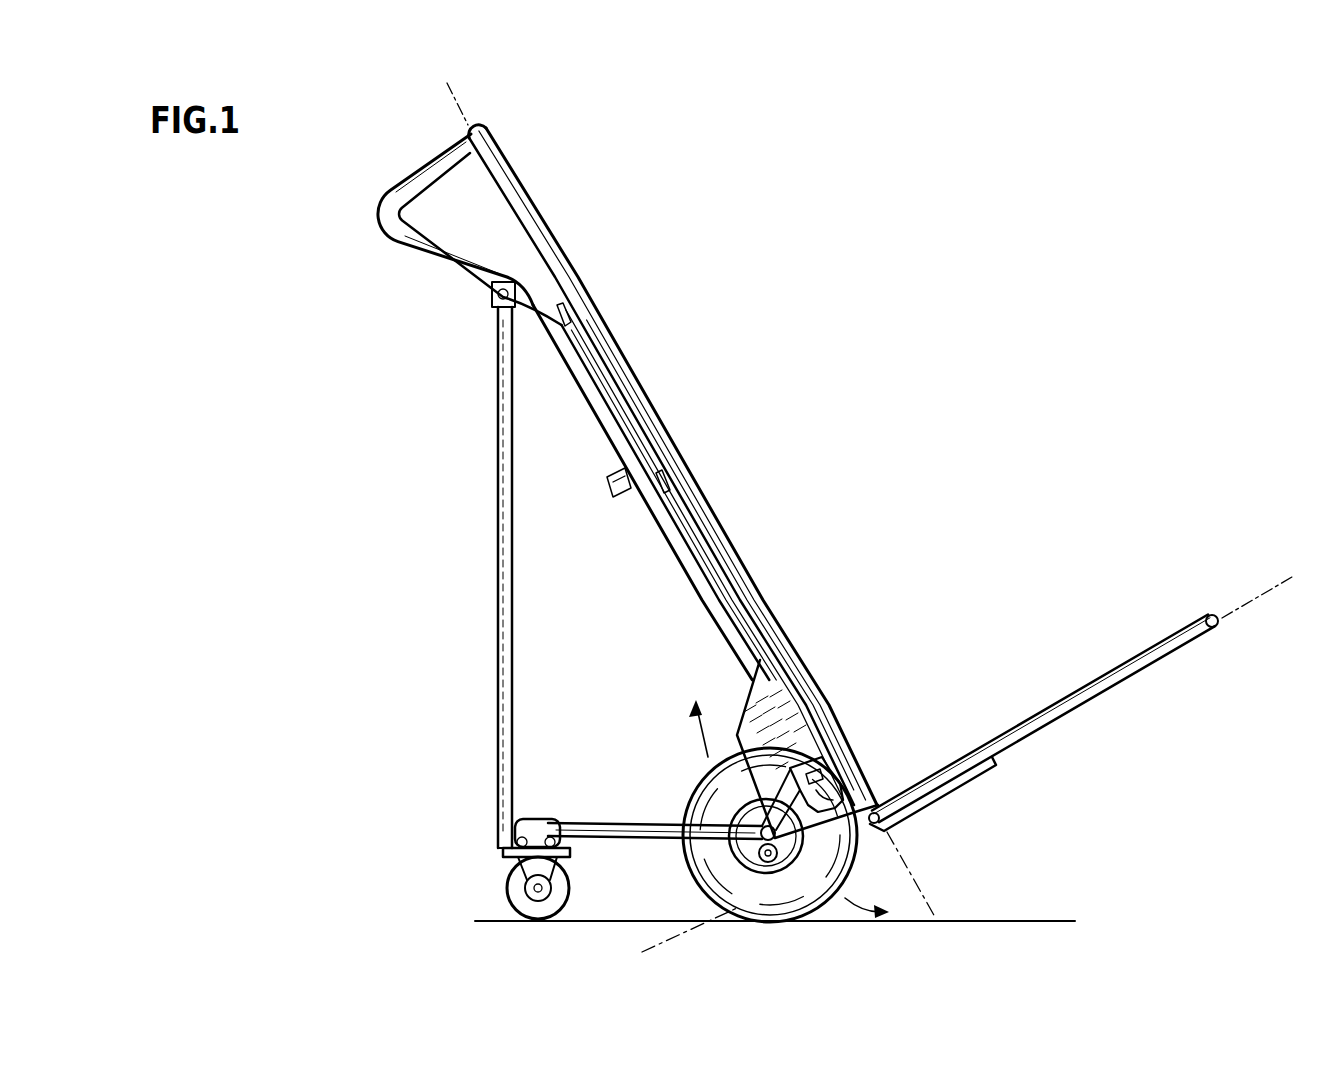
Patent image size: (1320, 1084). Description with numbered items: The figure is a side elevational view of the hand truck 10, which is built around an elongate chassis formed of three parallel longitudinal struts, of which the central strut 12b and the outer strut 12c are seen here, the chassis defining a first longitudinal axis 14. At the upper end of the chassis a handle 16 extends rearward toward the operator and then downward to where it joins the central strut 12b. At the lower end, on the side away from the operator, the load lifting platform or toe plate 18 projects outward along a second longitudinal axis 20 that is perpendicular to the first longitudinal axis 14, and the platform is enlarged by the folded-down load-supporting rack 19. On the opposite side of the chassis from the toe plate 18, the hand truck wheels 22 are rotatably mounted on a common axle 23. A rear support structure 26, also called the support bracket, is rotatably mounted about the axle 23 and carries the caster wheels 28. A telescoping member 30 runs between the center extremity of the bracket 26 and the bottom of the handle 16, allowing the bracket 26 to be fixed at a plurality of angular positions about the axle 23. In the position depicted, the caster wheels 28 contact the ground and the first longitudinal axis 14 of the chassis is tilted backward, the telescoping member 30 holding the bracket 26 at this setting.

The hand truck 10 is at (935, 260).
The central strut 12b is at (592, 412).
The longitudinal strut 12c is at (605, 330).
The first longitudinal axis 14 is at (456, 114).
The handle 16 is at (410, 178).
The toe plate 18 is at (975, 770).
The load-supporting rack 19 is at (1128, 657).
The second longitudinal axis 20 is at (1272, 583).
The hand truck wheels 22 is at (703, 778).
The axle 23 is at (755, 848).
The rear support structure 26 is at (583, 820).
The caster wheels 28 is at (574, 891).
The telescoping member 30 is at (498, 606).